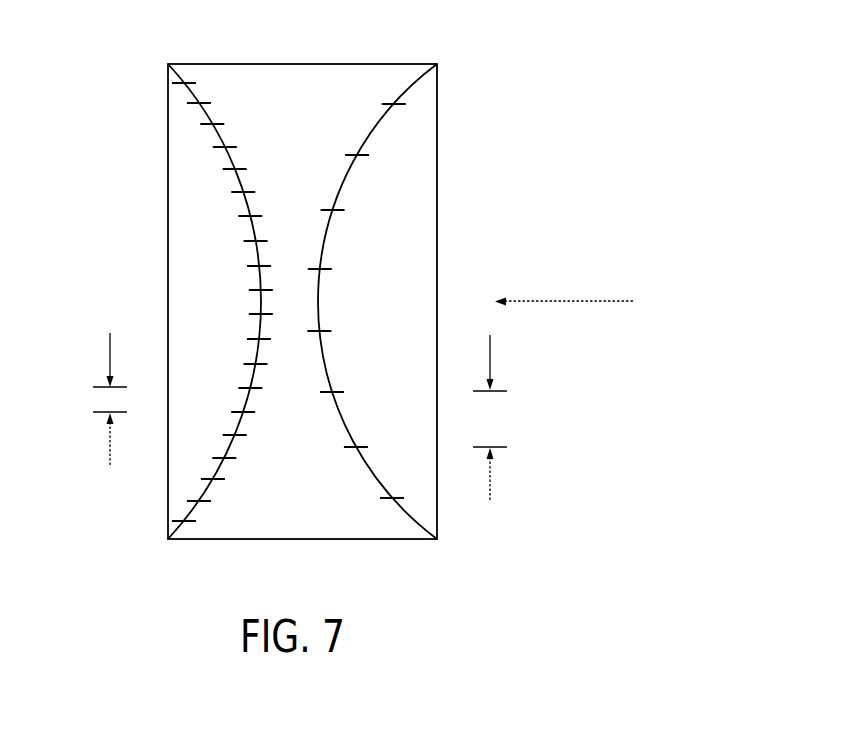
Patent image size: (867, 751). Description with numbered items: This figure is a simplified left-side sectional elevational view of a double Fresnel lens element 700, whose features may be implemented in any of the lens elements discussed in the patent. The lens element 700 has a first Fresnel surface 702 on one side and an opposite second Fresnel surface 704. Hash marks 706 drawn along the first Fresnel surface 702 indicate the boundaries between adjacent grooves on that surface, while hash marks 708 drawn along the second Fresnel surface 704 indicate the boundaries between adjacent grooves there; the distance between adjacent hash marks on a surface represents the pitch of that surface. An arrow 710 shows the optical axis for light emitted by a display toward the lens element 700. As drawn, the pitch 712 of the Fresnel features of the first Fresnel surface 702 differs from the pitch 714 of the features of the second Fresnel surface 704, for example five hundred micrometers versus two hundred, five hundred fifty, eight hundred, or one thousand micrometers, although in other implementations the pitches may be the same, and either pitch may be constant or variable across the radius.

The double Fresnel lens element 700 is at (586, 142).
The first Fresnel surface 702 is at (375, 128).
The second Fresnel surface 704 is at (212, 125).
The hash marks 706 is at (336, 212).
The hash marks 708 is at (246, 218).
The arrow 710 is at (575, 300).
The pitch 712 is at (492, 483).
The pitch 714 is at (110, 450).